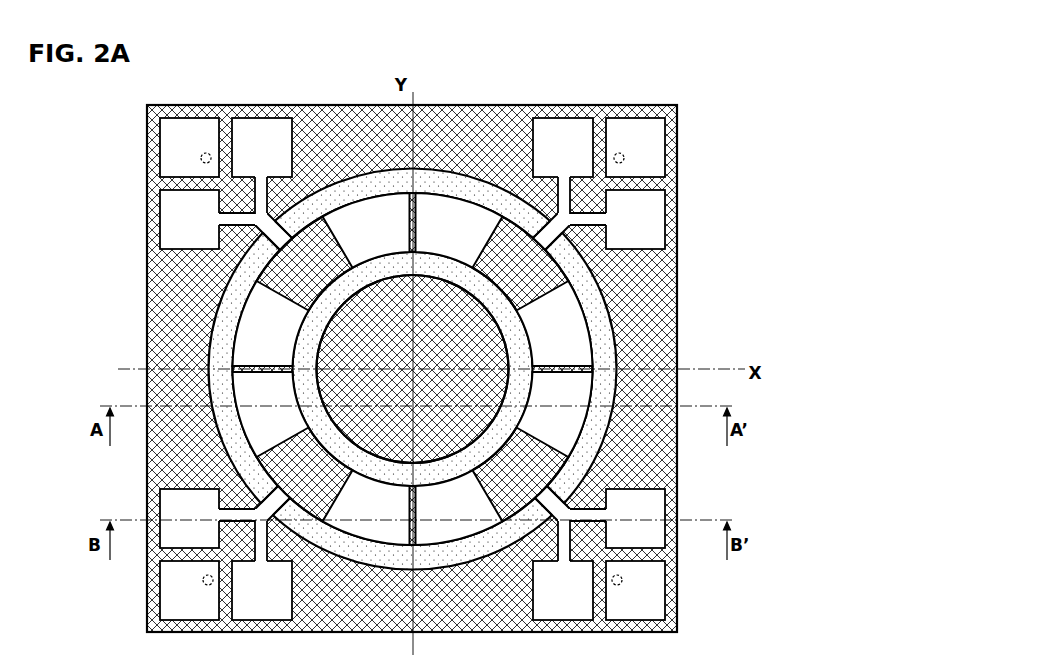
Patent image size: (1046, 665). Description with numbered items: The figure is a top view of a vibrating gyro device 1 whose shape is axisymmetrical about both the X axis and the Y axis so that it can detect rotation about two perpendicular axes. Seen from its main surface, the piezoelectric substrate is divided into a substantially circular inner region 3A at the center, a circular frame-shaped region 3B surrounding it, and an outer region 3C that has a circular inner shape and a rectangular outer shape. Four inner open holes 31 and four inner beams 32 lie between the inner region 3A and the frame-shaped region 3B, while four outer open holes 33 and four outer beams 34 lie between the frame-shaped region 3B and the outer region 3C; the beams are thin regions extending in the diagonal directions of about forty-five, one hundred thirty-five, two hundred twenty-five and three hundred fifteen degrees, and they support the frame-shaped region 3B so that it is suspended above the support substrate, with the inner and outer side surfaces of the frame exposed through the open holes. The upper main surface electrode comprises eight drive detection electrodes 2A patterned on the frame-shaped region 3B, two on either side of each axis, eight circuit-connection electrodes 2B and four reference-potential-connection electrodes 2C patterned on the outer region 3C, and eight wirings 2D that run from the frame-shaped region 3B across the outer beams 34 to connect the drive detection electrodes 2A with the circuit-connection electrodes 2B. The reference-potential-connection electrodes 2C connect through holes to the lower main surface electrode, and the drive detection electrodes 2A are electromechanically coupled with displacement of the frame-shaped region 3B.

The vibrating gyro device 1 is at (658, 107).
The drive detection electrode 2A is at (413, 369).
The circuit-connection electrode 2B is at (412, 369).
The reference-potential-connection electrode 2C is at (412, 369).
The wiring 2D is at (284, 222).
The inner region 3A is at (413, 369).
The frame-shaped region 3B is at (413, 369).
The outer region 3C is at (412, 368).
The inner open hole 31 is at (412, 368).
The inner beam 32 is at (413, 369).
The outer open hole 33 is at (411, 370).
The outer beam 34 is at (303, 240).